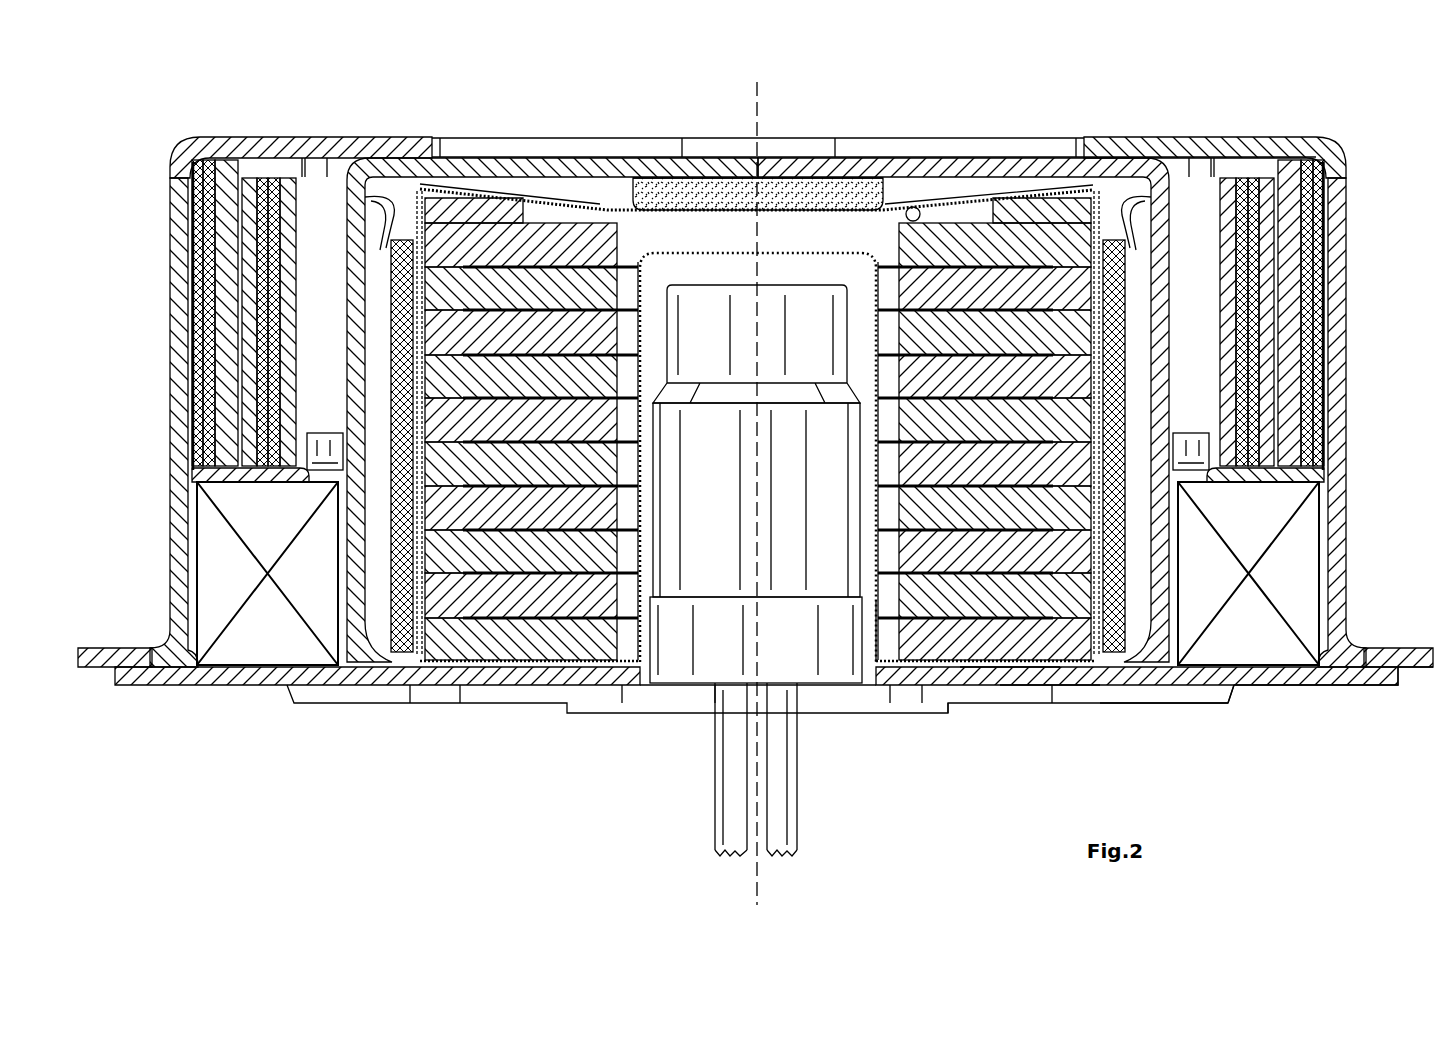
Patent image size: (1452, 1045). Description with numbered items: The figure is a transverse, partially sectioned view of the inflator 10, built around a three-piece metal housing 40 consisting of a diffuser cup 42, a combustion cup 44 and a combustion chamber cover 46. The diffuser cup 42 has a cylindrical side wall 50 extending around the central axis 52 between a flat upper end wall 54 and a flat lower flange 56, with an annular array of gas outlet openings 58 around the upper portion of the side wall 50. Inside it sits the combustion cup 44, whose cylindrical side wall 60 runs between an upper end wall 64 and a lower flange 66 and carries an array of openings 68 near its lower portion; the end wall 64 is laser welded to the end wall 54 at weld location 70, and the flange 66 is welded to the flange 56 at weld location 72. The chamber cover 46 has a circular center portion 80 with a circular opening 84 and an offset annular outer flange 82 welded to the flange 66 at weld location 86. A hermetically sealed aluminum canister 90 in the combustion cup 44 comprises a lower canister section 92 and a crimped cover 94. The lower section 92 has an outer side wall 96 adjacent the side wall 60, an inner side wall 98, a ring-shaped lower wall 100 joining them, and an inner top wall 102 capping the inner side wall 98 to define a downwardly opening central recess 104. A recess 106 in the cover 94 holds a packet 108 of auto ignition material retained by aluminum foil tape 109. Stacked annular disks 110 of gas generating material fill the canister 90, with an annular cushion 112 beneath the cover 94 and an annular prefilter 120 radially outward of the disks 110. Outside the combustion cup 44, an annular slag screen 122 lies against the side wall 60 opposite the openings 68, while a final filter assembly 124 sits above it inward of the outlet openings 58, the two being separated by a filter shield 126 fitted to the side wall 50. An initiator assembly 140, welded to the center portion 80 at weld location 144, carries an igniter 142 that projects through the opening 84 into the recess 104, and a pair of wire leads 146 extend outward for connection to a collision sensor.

The inflator 10 is at (300, 112).
The housing 40 is at (165, 491).
The diffuser cup 42 is at (93, 674).
The combustion cup 44 is at (210, 688).
The combustion chamber cover 46 is at (330, 706).
The side wall 50 is at (1337, 420).
The central axis 52 is at (757, 102).
The upper end wall 54 is at (1215, 146).
The lower flange 56 is at (1384, 648).
The gas outlet openings 58 is at (178, 305).
The side wall 60 is at (1172, 288).
The upper end wall 64 is at (1033, 160).
The lower flange 66 is at (1297, 680).
The openings 68 is at (1157, 598).
The weld location 70 is at (1118, 140).
The weld location 72 is at (1406, 672).
The center portion 80 is at (1086, 686).
The outer flange 82 is at (1172, 700).
The opening 84 is at (877, 670).
The weld location 86 is at (1235, 690).
The canister 90 is at (978, 193).
The lower canister section 92 is at (874, 470).
The cover 94 is at (955, 196).
The outer side wall 96 is at (1162, 316).
The inner side wall 98 is at (856, 376).
The lower wall 100 is at (1018, 678).
The inner top wall 102 is at (707, 257).
The central recess 104 is at (740, 270).
The recess 106 is at (842, 178).
The packet of auto ignition material 108 is at (690, 180).
The aluminum foil tape 109 is at (913, 206).
The annular disks of gas generating material 110 is at (948, 637).
The annular cushion 112 is at (1060, 193).
The prefilter 120 is at (1106, 354).
The slag screen 122 is at (1253, 553).
The final filter assembly 124 is at (1290, 215).
The filter shield 126 is at (1318, 480).
The initiator assembly 140 is at (670, 757).
The igniter 142 is at (793, 283).
The weld location 144 is at (952, 705).
The wire leads 146 is at (778, 838).